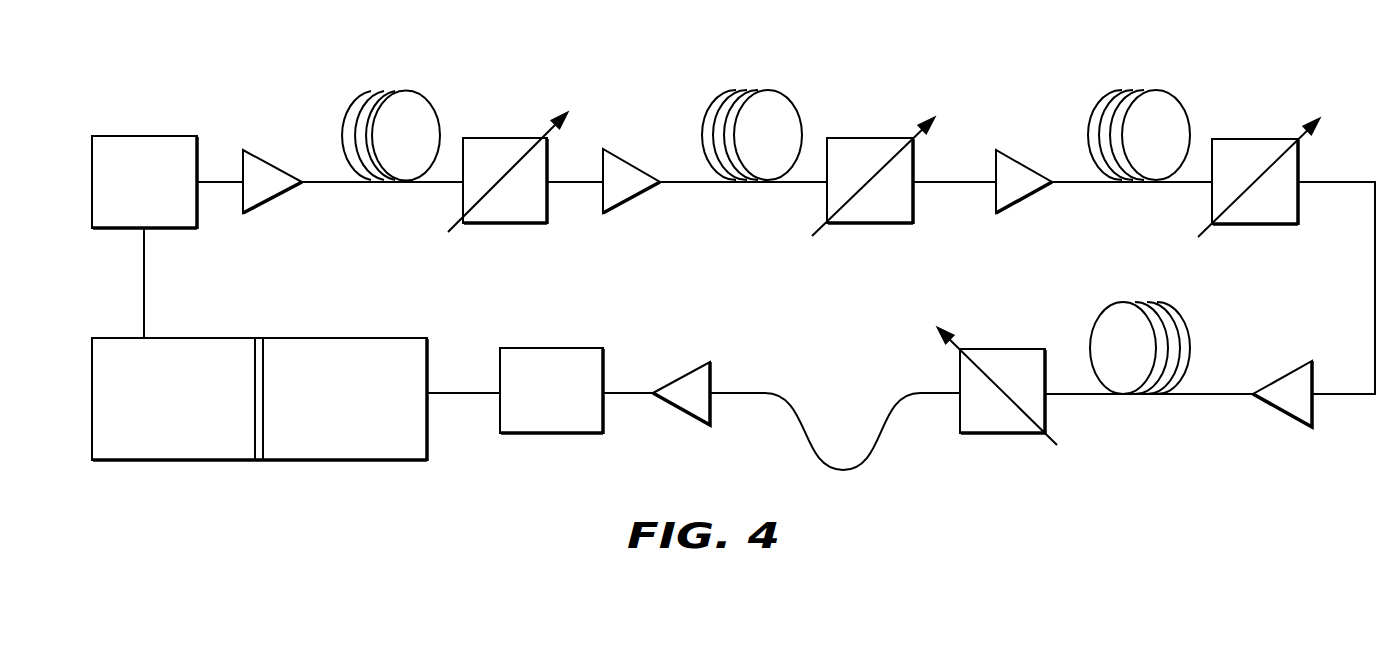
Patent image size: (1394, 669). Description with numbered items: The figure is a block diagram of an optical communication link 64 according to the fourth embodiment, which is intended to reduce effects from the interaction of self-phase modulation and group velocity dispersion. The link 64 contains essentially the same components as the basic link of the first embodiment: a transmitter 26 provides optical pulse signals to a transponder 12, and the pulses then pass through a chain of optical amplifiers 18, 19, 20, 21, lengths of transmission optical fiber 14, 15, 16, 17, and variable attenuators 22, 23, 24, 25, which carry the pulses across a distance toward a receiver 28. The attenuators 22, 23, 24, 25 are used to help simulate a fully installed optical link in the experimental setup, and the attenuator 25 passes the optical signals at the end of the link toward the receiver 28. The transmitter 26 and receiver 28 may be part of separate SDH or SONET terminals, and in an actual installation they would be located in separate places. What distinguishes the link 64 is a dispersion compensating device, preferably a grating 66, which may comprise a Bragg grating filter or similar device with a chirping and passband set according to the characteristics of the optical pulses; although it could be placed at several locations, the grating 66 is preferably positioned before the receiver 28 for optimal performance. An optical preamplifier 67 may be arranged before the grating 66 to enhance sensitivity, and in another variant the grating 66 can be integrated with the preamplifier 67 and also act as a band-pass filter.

The transponder 12 is at (132, 137).
The transmission optical fiber 14 is at (379, 90).
The transmission optical fiber 15 is at (762, 90).
The transmission optical fiber 16 is at (1138, 90).
The transmission optical fiber 17 is at (1135, 302).
The optical amplifier 18 is at (267, 165).
The optical amplifier 19 is at (620, 162).
The optical amplifier 20 is at (1012, 160).
The optical amplifier 21 is at (1285, 378).
The variable attenuator 22 is at (493, 142).
The variable attenuator 23 is at (868, 142).
The variable attenuator 24 is at (1247, 142).
The variable attenuator 25 is at (1008, 350).
The transmitter 26 is at (190, 338).
The receiver 28 is at (420, 350).
The optical communication link 64 is at (450, 485).
The grating 66 is at (558, 348).
The optical preamplifier 67 is at (680, 384).